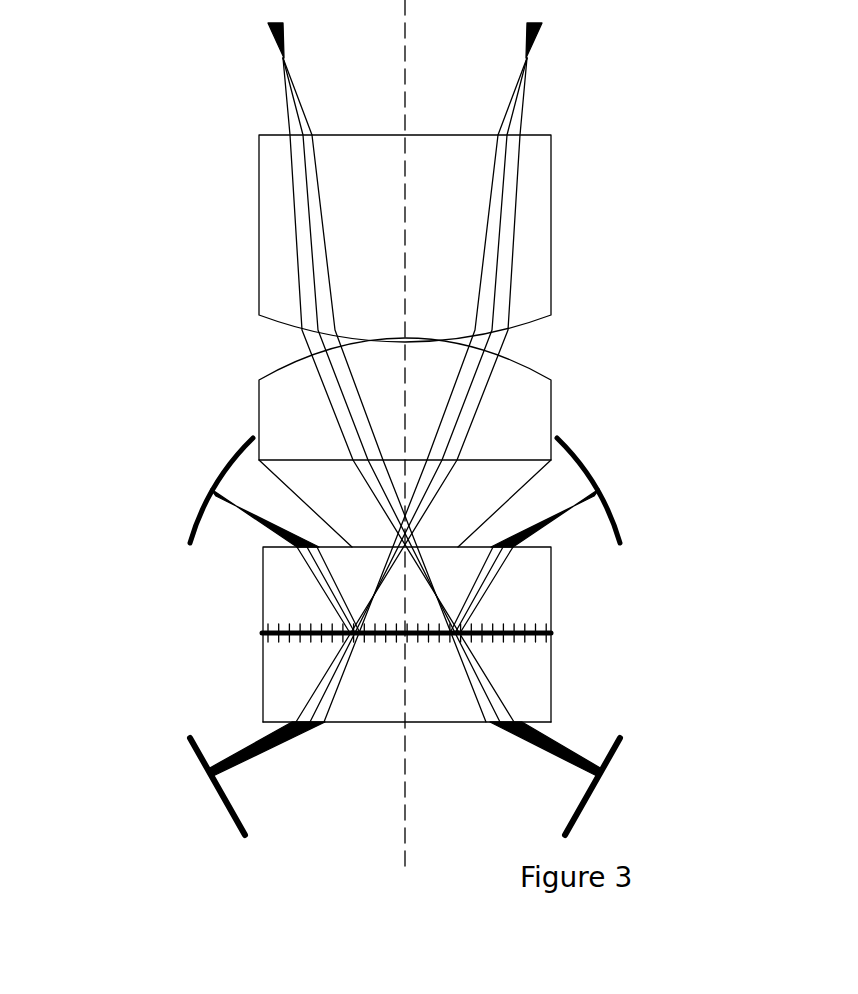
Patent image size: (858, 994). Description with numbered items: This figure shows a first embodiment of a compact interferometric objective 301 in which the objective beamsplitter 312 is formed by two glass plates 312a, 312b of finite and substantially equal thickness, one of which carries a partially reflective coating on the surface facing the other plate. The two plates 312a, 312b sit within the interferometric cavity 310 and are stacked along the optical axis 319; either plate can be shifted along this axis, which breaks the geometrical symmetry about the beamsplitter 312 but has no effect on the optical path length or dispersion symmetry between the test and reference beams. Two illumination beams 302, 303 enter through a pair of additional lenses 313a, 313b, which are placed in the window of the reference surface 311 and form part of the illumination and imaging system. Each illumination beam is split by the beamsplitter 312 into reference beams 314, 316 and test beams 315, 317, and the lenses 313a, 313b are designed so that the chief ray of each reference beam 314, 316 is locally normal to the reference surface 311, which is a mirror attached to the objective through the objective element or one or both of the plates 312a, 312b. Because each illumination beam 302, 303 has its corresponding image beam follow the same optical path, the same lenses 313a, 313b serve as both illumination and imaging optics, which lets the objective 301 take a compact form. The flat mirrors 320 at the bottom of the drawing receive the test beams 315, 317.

The interferometric objective 301 is at (700, 154).
The illumination beam 302 is at (308, 282).
The illumination beam 303 is at (500, 292).
The interferometric cavity 310 is at (420, 728).
The reference surface 311 is at (238, 461).
The objective beamsplitter 312 is at (552, 633).
The glass plate 312a is at (285, 574).
The glass plate 312b is at (278, 696).
The lens 313a is at (545, 235).
The lens 313b is at (547, 403).
The reference beam 314 is at (327, 592).
The test beam 315 is at (323, 682).
The reference beam 316 is at (483, 597).
The test beam 317 is at (490, 675).
The optical axis 319 is at (405, 762).
The flat mirrors 320 is at (235, 812).